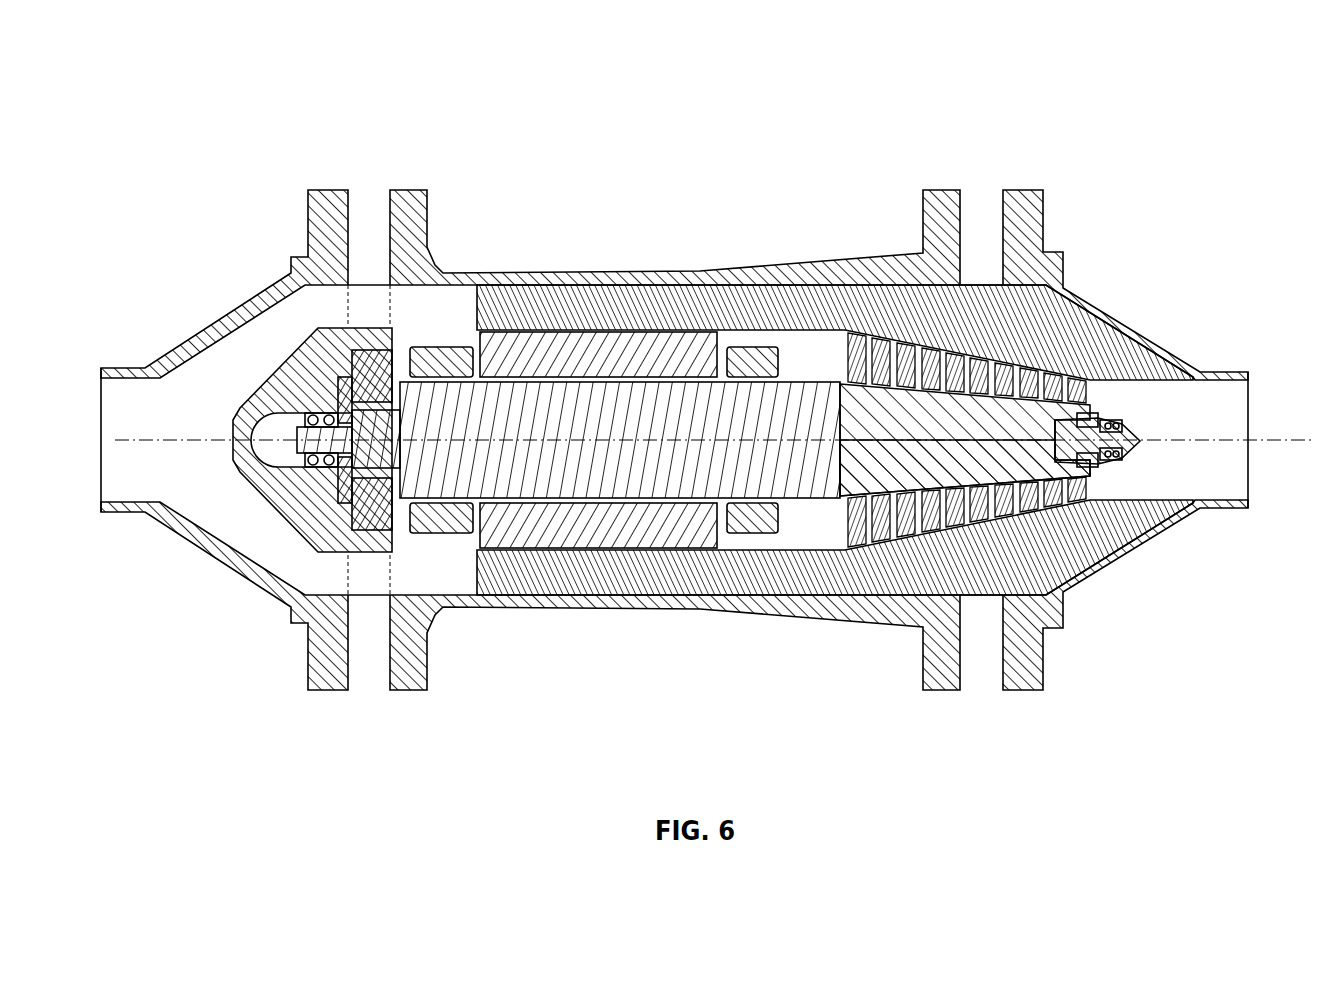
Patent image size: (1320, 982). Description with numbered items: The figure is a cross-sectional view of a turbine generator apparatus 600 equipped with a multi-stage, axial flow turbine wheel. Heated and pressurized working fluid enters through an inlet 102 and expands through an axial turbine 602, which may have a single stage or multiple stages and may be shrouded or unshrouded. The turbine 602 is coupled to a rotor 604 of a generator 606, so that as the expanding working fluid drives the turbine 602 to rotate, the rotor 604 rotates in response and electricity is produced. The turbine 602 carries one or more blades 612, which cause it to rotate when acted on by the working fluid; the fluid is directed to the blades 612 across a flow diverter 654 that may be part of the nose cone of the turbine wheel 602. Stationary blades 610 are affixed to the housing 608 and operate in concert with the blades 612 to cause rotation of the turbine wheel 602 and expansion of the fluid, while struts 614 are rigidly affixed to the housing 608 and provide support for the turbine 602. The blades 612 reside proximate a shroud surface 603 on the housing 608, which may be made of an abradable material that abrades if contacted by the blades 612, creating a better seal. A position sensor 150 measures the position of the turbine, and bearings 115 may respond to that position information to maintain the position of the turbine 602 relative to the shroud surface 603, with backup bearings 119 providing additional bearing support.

The turbine generator apparatus 600 is at (184, 92).
The axial turbine 602 is at (835, 415).
The shroud surface 603 is at (912, 337).
The rotor 604 is at (625, 418).
The generator 606 is at (604, 575).
The housing 608 is at (868, 300).
The blades 610 is at (870, 545).
The blades 612 is at (930, 527).
The struts 614 is at (1122, 557).
The flow diverter 654 is at (1130, 453).
The position sensor 150 is at (1093, 527).
The bearings 115 is at (1093, 413).
The backup bearings 119 is at (1115, 420).
The inlet 102 is at (1234, 421).